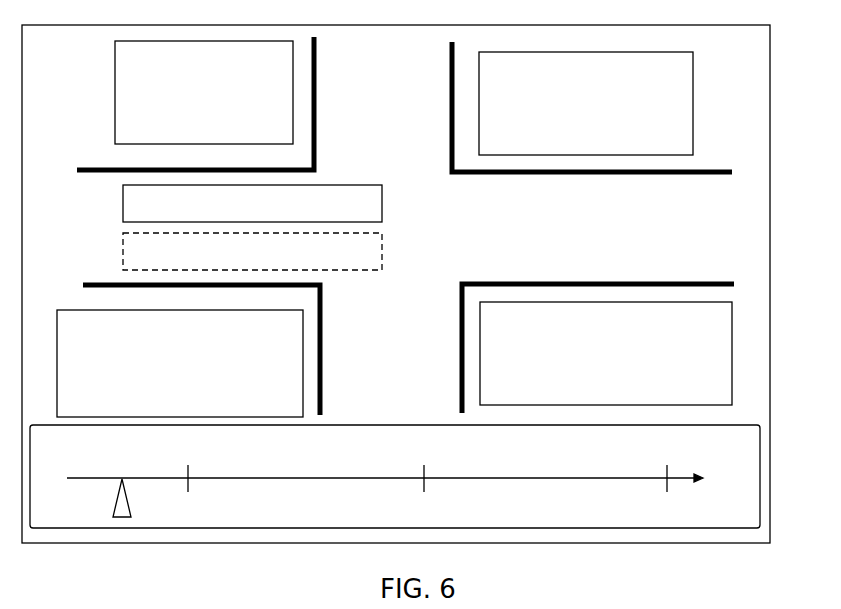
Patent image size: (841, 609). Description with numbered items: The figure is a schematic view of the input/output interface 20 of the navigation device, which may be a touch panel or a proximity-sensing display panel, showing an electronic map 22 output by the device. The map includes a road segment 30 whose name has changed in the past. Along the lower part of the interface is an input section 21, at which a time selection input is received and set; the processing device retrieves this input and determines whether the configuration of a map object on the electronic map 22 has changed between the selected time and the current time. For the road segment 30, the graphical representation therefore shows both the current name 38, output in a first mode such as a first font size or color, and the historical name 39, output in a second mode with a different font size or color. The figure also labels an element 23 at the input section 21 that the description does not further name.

The input/output interface 20 is at (658, 543).
The input section 21 is at (742, 528).
The electronic map 22 is at (764, 79).
The slider 23 is at (113, 517).
The road segment 30 is at (391, 66).
The current name 38 is at (387, 255).
The historical name 39 is at (387, 205).